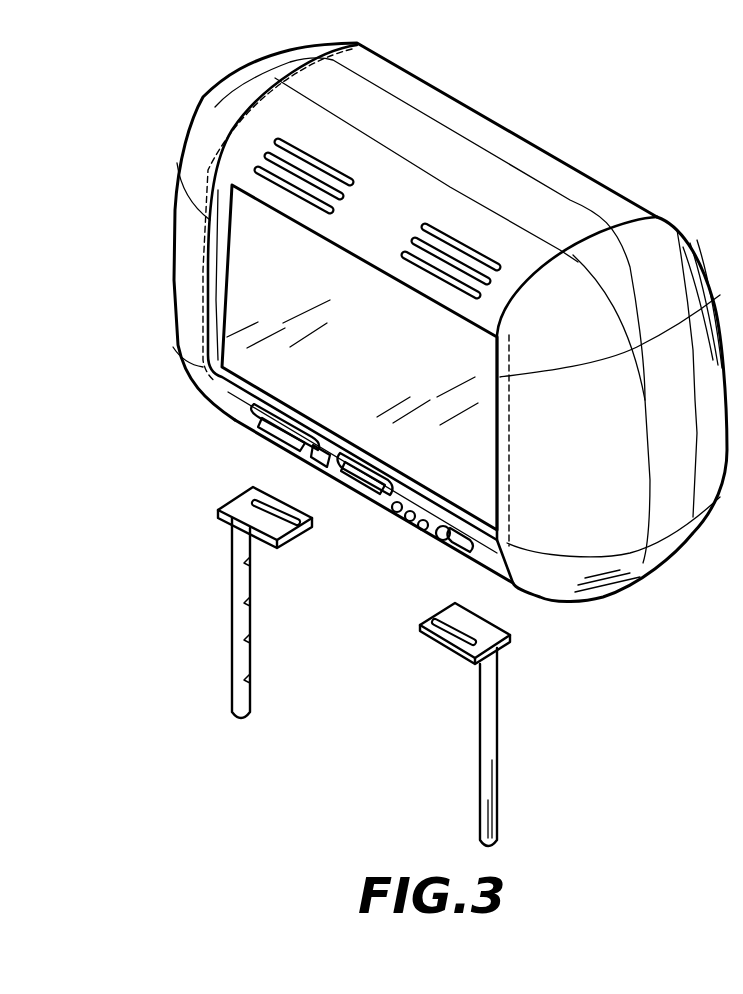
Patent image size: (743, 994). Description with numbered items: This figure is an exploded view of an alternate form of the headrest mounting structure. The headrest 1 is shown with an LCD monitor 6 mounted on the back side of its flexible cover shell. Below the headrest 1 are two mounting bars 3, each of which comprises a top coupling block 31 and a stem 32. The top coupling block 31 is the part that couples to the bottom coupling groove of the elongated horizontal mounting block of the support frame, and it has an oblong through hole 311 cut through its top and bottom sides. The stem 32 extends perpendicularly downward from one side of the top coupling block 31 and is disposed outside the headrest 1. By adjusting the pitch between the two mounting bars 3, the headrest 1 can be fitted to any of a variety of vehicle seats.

The headrest 1 is at (503, 177).
The LCD monitor 6 is at (255, 298).
The mounting bar 3 is at (308, 658).
The top coupling block 31 is at (251, 532).
The oblong through hole 311 is at (293, 520).
The stem 32 is at (243, 663).